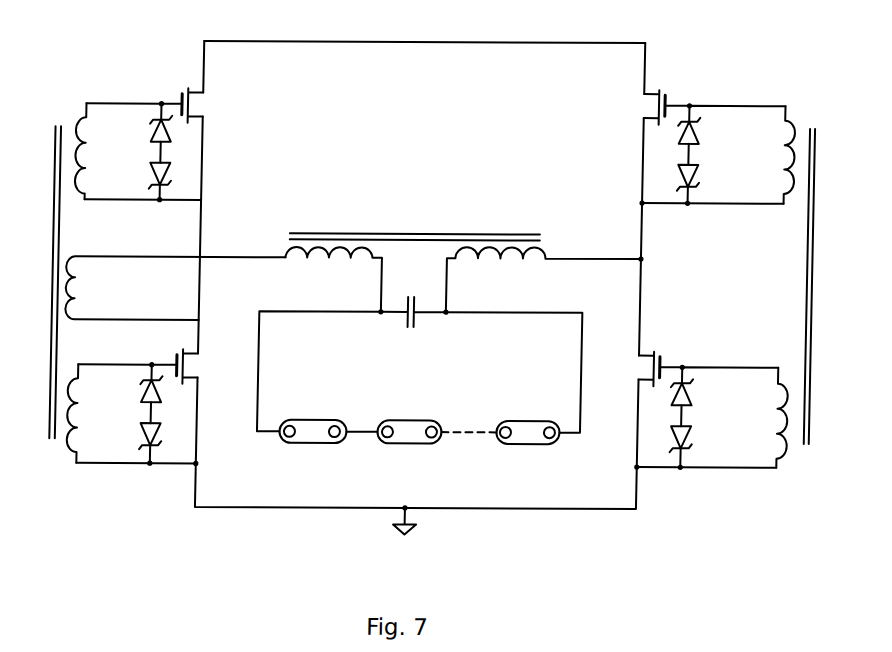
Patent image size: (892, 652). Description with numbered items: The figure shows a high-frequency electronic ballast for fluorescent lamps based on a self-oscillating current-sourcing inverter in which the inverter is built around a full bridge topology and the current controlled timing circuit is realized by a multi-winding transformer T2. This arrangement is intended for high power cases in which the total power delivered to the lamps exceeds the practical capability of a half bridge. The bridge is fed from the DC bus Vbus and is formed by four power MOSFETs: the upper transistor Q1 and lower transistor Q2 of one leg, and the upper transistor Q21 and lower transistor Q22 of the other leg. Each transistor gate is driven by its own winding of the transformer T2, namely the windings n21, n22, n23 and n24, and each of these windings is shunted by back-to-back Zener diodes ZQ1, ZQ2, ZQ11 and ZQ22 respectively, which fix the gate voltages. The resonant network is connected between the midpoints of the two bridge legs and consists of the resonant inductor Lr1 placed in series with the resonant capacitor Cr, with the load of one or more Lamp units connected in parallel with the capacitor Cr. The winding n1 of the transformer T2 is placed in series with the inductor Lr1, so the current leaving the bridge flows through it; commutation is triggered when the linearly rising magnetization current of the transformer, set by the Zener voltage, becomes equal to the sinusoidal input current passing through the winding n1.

The DC bus voltage Vbus is at (425, 25).
The multi-winding transformer T2 is at (433, 267).
The power MOSFET Q1 is at (198, 105).
The power MOSFET Q2 is at (188, 366).
The power MOSFET Q21 is at (643, 107).
The power MOSFET Q22 is at (638, 368).
The Zener diodes ZQ1 is at (144, 152).
The Zener diodes ZQ2 is at (138, 414).
The Zener diodes ZQ11 is at (712, 154).
The Zener diodes ZQ22 is at (706, 417).
The third winding n1 is at (175, 288).
The winding n21 is at (98, 151).
The winding n22 is at (90, 413).
The winding n23 is at (770, 155).
The winding n24 is at (763, 418).
The resonant inductor Lr1 is at (464, 260).
The resonant capacitor Cr is at (414, 299).
The fluorescent lamp Lamp is at (420, 377).